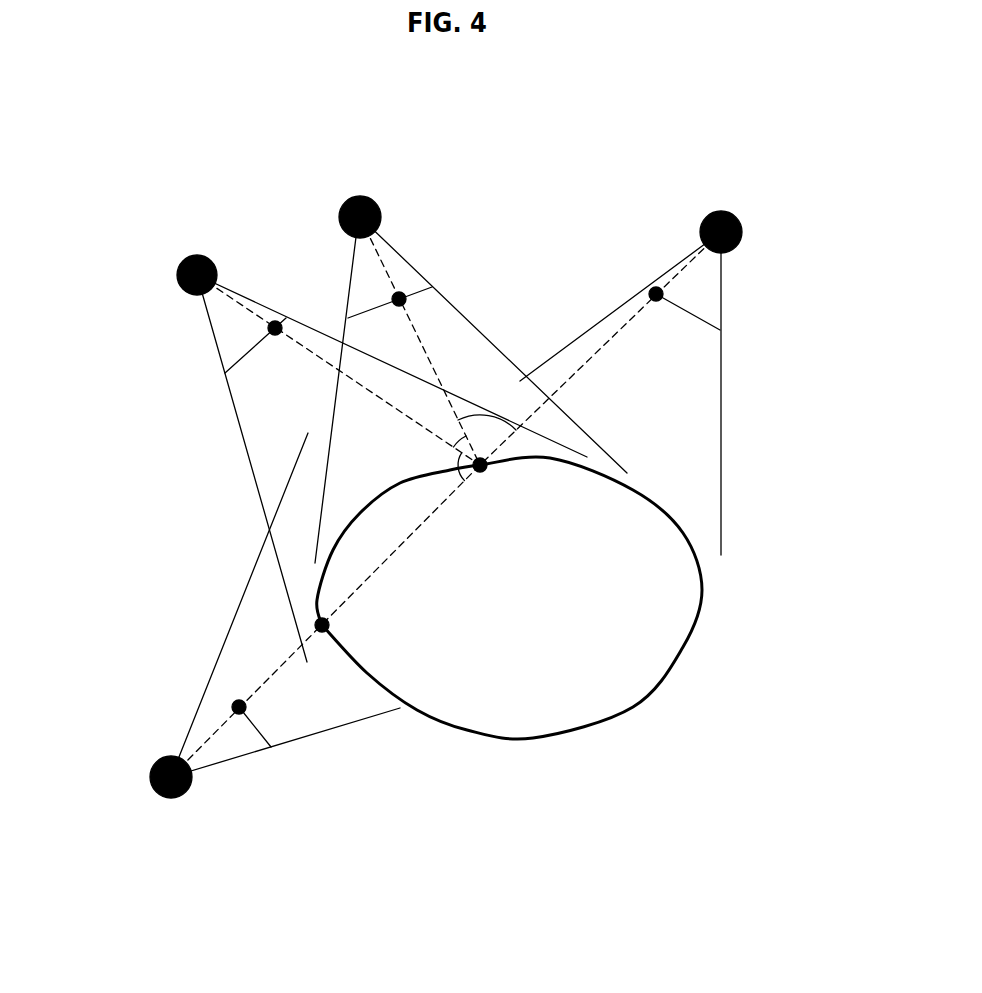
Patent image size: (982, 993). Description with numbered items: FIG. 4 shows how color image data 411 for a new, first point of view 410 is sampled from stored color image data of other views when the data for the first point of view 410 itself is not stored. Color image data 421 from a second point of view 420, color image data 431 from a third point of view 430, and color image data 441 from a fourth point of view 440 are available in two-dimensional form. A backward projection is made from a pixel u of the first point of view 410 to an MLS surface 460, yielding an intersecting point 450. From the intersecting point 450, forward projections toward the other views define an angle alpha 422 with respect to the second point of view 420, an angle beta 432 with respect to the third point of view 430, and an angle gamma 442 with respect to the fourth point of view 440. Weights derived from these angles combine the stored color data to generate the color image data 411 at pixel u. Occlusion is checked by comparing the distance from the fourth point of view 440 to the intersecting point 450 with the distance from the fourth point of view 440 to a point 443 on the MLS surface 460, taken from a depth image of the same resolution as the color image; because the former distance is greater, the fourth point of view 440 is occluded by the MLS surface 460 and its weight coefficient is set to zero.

The first point of view 410 is at (453, 350).
The color image data from the first point of view 411 is at (402, 293).
The second point of view 420 is at (648, 354).
The color image data from the second point of view 421 is at (660, 292).
The angle alpha 422 is at (483, 412).
The third point of view 430 is at (349, 431).
The color image data from the third point of view 431 is at (268, 327).
The angle beta 432 is at (453, 447).
The fourth point of view 440 is at (277, 659).
The color image data from the fourth point of view 441 is at (239, 700).
The angle gamma 442 is at (458, 467).
The point 443 is at (328, 623).
The intersecting point 450 is at (476, 473).
The MLS surface 460 is at (667, 675).